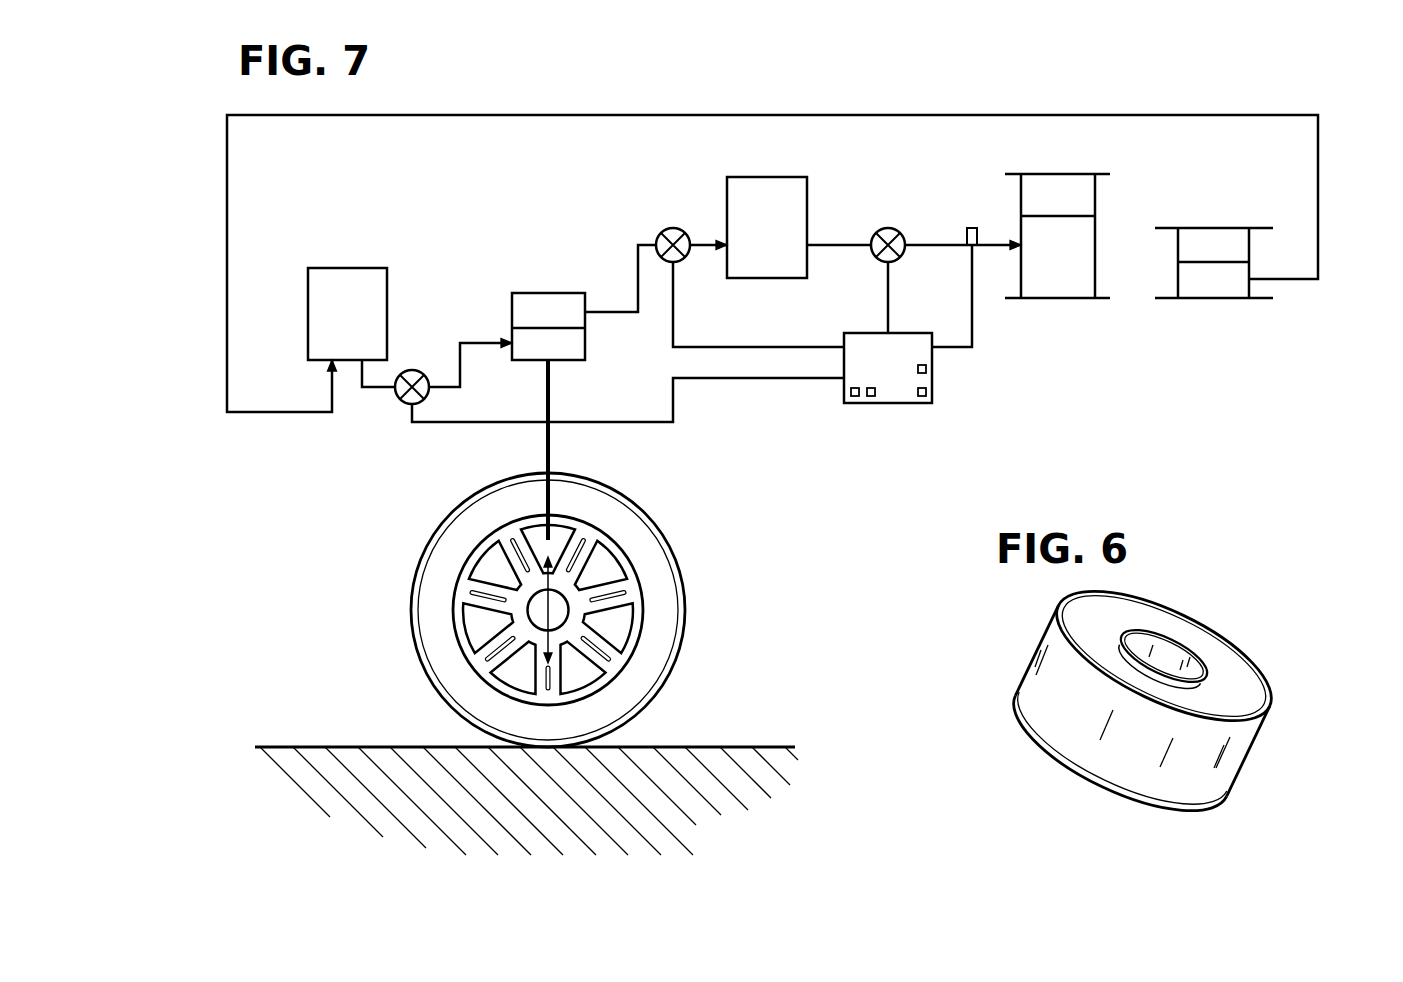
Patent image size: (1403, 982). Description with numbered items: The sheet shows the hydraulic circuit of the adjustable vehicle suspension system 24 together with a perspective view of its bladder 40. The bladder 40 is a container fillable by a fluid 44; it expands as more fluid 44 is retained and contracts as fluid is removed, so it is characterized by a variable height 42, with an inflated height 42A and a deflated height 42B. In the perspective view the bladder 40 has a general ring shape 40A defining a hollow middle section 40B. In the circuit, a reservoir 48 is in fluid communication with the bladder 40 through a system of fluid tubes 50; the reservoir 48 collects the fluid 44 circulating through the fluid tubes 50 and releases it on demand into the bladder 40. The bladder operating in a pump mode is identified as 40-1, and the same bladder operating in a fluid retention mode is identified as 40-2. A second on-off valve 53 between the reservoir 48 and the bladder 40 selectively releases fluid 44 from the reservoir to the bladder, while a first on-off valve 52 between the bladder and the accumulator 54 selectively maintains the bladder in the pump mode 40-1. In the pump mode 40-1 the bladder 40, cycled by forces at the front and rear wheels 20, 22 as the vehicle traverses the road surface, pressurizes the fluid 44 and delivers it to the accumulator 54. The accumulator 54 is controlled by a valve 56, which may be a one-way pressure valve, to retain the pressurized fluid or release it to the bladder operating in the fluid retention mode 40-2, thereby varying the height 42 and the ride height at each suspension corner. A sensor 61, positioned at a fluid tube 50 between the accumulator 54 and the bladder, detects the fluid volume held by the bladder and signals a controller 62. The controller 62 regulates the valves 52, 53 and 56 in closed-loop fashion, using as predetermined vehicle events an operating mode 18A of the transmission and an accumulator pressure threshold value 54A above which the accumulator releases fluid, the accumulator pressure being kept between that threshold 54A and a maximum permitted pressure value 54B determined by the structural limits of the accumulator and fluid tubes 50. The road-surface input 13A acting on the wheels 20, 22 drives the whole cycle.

In FIG. 7, the fluid tubes 50 is at (480, 340).
In FIG. 7, the reservoir 48 is at (355, 268).
In FIG. 7, the second on-off valve 53 is at (412, 370).
In FIG. 7, the pump mode 40-1 is at (571, 284).
In FIG. 7, the bladder 40 is at (1139, 291).
In FIG. 6, the bladder 40 is at (1194, 720).
In FIG. 7, the first on-off valve 52 is at (672, 228).
In FIG. 7, the accumulator 54 is at (765, 280).
In FIG. 7, the valve 56 is at (893, 228).
In FIG. 7, the sensor 61 is at (972, 228).
In FIG. 7, the controller 62 is at (896, 395).
In FIG. 7, the operating mode of the transmission 18A is at (851, 393).
In FIG. 7, the connector / input 13A is at (871, 400).
In FIG. 7, the accumulator pressure threshold value 54A is at (922, 400).
In FIG. 7, the maximum permitted pressure value 54B is at (928, 369).
In FIG. 7, the inflated height 42A is at (1112, 298).
In FIG. 7, the deflated height 42B is at (1264, 298).
In FIG. 7, the fluid retention mode 40-2 is at (1131, 322).
In FIG. 7, the fluid 44 is at (1032, 262).
In FIG. 7, the front wheels 20 is at (482, 610).
In FIG. 7, the rear wheels 22 is at (548, 610).
In FIG. 7, the adjustable vehicle suspension system 24 is at (758, 481).
In FIG. 6, the ring shape 40A is at (1113, 748).
In FIG. 6, the hollow middle section 40B is at (1170, 667).
In FIG. 6, the variable height 42 is at (1197, 878).